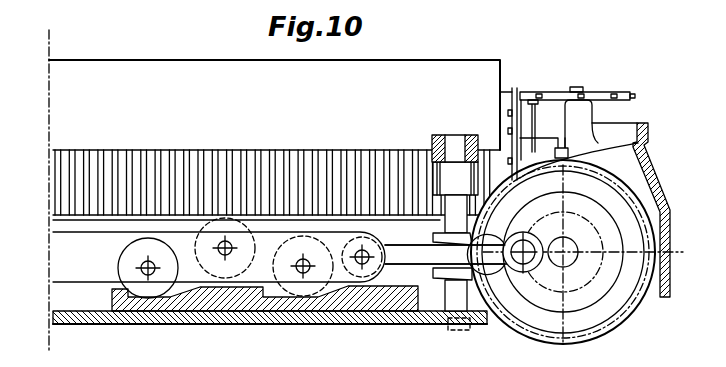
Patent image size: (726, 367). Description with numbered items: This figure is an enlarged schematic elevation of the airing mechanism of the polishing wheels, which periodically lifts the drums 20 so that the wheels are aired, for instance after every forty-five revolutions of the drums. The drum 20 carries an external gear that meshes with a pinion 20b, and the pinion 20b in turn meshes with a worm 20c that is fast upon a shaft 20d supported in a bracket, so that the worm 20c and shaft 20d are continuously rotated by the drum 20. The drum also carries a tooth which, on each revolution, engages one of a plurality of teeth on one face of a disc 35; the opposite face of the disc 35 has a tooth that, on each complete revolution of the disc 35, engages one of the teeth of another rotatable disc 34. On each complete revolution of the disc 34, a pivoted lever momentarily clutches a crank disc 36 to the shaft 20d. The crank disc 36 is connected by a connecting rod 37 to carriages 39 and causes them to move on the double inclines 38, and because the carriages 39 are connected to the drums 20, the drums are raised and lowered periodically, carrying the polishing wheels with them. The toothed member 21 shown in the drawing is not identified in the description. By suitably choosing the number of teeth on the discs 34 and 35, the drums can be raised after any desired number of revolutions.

The drum 20 is at (456, 62).
The rack 21 is at (345, 157).
The pinion 20b is at (431, 146).
The worm 20c is at (523, 337).
The shaft 20d is at (570, 264).
The rotatable disc 34 is at (558, 95).
The disc 35 is at (516, 90).
The crank disc 36 is at (602, 288).
The connecting rod 37 is at (427, 258).
The double incline 38 is at (318, 307).
The carriage 39 is at (285, 243).